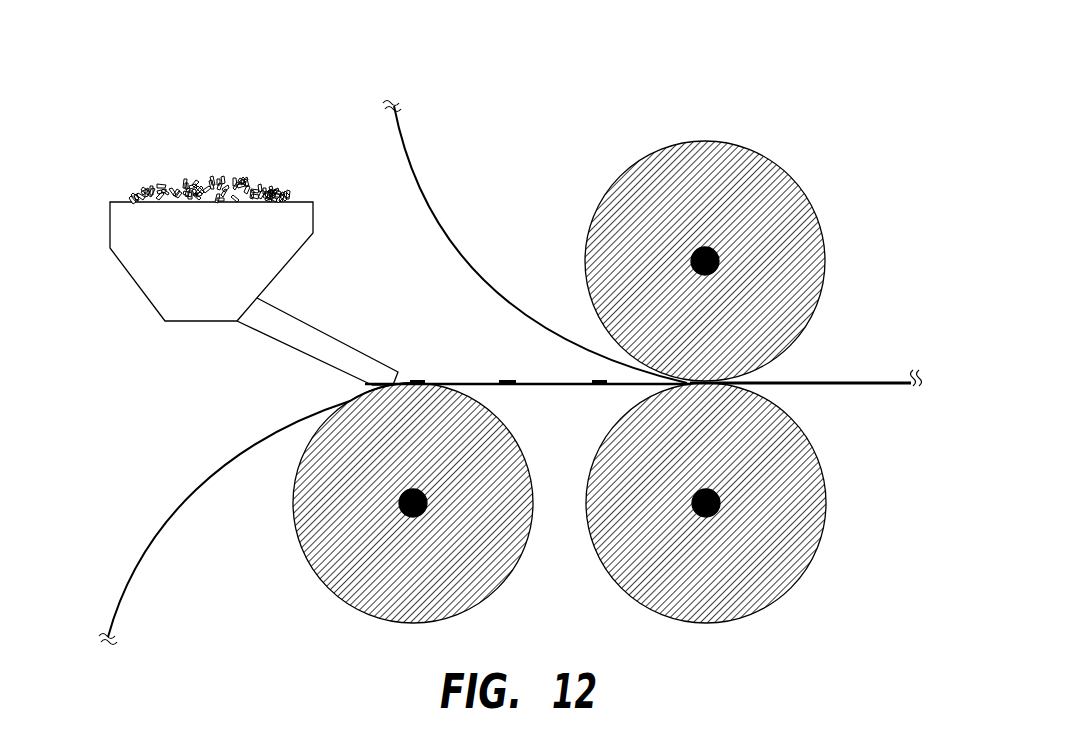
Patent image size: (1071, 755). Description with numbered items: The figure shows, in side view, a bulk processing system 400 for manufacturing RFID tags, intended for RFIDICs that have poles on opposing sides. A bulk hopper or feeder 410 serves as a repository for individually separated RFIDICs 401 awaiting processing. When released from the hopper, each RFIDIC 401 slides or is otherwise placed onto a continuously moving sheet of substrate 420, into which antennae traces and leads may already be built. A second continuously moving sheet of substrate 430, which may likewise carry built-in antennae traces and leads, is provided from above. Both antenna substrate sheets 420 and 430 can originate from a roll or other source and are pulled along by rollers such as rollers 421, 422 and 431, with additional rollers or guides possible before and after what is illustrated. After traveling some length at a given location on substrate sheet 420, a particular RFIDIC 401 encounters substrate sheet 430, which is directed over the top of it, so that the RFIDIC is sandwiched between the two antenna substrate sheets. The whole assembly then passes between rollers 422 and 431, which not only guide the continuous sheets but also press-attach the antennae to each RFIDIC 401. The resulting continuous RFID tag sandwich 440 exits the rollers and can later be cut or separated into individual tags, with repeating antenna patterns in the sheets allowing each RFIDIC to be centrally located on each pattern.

The bulk processing system 400 is at (224, 60).
The RFIDIC 401 is at (508, 380).
The bulk hopper or feeder 410 is at (182, 268).
The substrate sheet 420 is at (190, 487).
The roller 421 is at (330, 532).
The roller 422 is at (793, 512).
The second substrate sheet 430 is at (418, 190).
The roller 431 is at (787, 222).
The continuous RFID tag sandwich 440 is at (857, 381).